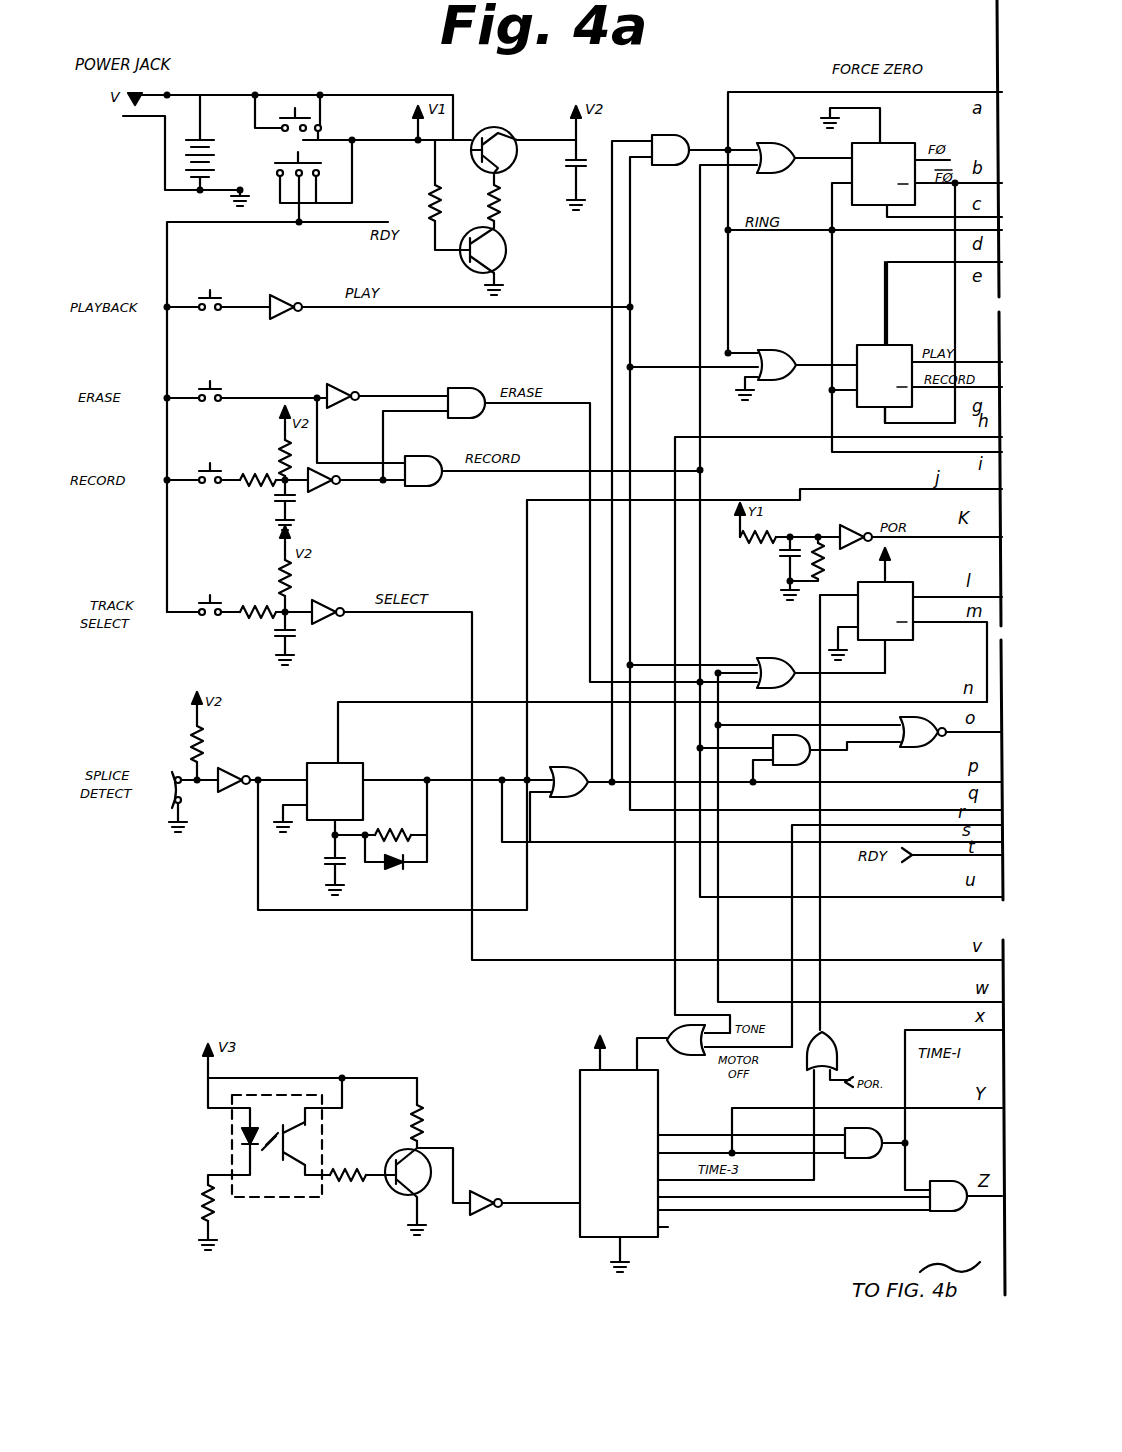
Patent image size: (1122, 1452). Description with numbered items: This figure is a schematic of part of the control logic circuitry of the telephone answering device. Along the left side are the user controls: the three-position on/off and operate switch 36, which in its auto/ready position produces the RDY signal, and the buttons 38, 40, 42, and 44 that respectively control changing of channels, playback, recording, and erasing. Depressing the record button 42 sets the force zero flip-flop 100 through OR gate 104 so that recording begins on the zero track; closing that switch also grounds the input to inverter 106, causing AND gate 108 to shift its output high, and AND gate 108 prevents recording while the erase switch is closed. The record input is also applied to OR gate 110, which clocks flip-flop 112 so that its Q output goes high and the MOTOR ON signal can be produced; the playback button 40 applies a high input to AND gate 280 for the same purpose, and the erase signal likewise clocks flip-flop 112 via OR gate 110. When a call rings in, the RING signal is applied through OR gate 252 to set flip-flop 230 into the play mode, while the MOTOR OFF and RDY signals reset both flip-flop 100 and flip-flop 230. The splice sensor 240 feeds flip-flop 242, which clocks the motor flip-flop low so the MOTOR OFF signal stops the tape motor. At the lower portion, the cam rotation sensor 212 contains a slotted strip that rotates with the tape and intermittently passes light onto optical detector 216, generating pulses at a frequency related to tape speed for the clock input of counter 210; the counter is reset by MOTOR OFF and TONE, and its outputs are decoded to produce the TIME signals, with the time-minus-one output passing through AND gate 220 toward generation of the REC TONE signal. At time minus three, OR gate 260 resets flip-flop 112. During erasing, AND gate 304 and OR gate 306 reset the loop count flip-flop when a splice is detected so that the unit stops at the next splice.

The on/off and operate switch 36 is at (322, 131).
The channel change button 38 is at (212, 603).
The playback button 40 is at (222, 297).
The record button 42 is at (222, 470).
The erase button 44 is at (222, 392).
The force zero flip-flop 100 is at (905, 78).
The OR gate 104 is at (790, 130).
The inverter 106 is at (322, 490).
The AND gate 108 is at (425, 487).
The OR gate 110 is at (790, 645).
The flip-flop 112 is at (900, 586).
The counter 210 is at (580, 1100).
The cam rotation sensor 212 is at (300, 1110).
The optical detector 216 is at (312, 1139).
The AND gate 220 is at (856, 1160).
The flip-flop 230 is at (895, 345).
The sensor 240 is at (200, 798).
The flip-flop 242 is at (364, 768).
The OR gate 252 is at (796, 352).
The OR gate 260 is at (838, 1056).
The AND gate 280 is at (674, 136).
The AND gate 304 is at (800, 727).
The OR gate 306 is at (938, 748).